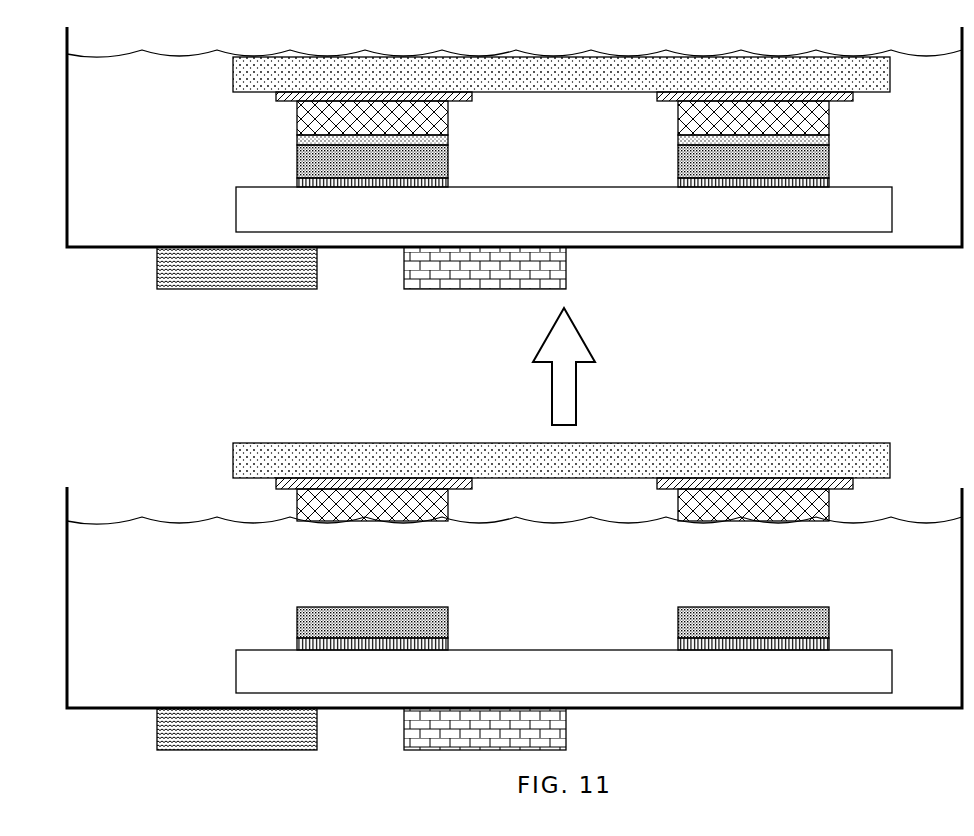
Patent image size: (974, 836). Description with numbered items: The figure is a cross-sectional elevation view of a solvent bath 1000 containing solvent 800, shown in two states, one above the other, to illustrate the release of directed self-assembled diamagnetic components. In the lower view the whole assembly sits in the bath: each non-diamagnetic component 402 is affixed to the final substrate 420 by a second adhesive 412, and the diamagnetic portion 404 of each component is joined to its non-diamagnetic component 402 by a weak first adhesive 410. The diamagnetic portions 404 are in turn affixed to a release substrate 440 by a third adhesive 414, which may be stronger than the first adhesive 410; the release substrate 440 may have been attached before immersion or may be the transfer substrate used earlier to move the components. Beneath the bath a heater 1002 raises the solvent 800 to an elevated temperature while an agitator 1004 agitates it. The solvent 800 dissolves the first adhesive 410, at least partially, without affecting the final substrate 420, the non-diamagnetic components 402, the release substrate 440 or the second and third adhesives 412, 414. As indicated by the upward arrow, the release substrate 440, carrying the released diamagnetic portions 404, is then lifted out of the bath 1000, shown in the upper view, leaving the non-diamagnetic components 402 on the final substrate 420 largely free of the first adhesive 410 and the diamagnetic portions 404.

The solvent bath 1000 is at (919, 61).
The solvent 800 is at (127, 108).
The release substrate 440 is at (233, 81).
The third adhesive 414 is at (287, 99).
The diamagnetic portion 404 is at (297, 125).
The first adhesive 410 is at (448, 138).
The non-diamagnetic component 402 is at (297, 160).
The second adhesive 412 is at (450, 183).
The final substrate 420 is at (236, 209).
The heater 1002 is at (157, 281).
The agitator 1004 is at (566, 282).